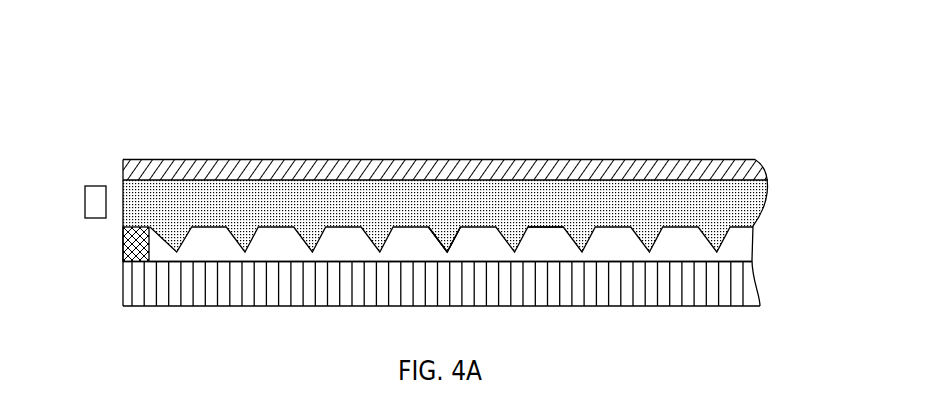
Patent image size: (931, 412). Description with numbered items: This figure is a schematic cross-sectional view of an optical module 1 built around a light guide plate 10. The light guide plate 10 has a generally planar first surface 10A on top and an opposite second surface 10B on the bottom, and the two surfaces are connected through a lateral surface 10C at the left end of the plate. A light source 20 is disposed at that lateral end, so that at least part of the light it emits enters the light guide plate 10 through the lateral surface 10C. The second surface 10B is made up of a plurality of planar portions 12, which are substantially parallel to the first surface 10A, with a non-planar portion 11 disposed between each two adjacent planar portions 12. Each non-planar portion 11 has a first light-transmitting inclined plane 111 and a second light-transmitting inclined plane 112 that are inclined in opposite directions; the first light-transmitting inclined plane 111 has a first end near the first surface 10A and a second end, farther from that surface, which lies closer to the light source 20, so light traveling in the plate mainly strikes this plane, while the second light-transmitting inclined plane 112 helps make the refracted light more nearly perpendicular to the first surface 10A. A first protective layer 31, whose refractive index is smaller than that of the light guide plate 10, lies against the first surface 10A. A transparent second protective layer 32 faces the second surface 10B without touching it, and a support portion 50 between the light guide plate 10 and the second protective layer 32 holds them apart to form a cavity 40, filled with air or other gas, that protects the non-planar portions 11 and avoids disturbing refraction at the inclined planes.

The optical module 1 is at (102, 48).
The light guide plate 10 is at (437, 164).
The first surface 10A is at (667, 179).
The second surface 10B is at (613, 65).
The lateral surface 10C is at (122, 203).
The non-planar portion 11 is at (527, 110).
The first light-transmitting inclined plane 111 is at (451, 249).
The second light-transmitting inclined plane 112 is at (435, 232).
The planar portion 12 is at (548, 229).
The light source 20 is at (97, 187).
The first protective layer 31 is at (752, 170).
The second protective layer 32 is at (723, 289).
The cavity 40 is at (215, 247).
The support portion 50 is at (138, 250).